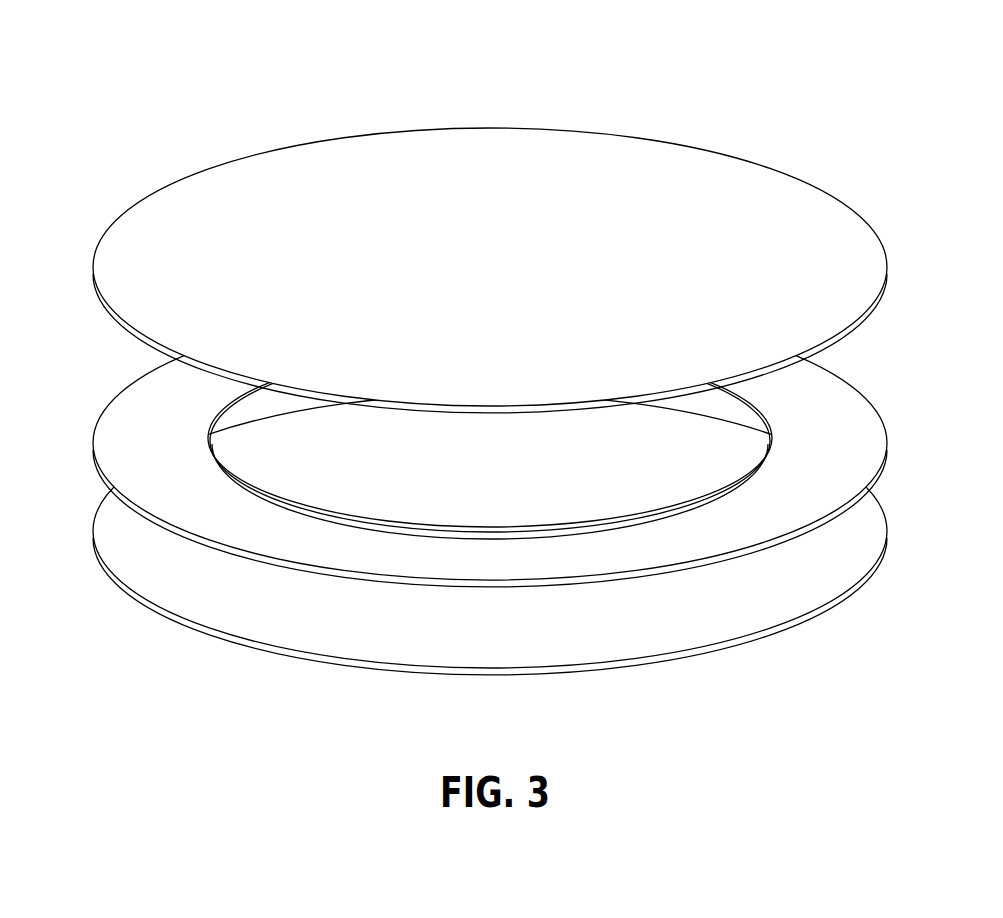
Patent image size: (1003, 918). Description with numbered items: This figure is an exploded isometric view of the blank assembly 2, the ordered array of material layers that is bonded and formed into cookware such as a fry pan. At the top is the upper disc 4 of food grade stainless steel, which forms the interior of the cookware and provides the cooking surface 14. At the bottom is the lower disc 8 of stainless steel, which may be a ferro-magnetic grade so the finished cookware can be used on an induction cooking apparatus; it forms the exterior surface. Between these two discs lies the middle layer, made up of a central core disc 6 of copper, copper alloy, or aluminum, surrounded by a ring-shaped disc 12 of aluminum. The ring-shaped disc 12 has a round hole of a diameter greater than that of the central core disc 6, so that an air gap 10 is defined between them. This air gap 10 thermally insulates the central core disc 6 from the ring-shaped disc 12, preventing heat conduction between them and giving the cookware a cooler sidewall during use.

The blank assembly 2 is at (544, 352).
The upper disc 4 is at (490, 221).
The central core disc 6 is at (490, 446).
The lower disc 8 is at (541, 630).
The air gap 10 is at (774, 438).
The ring-shaped disc 12 is at (779, 508).
The cooking surface 14 is at (459, 207).